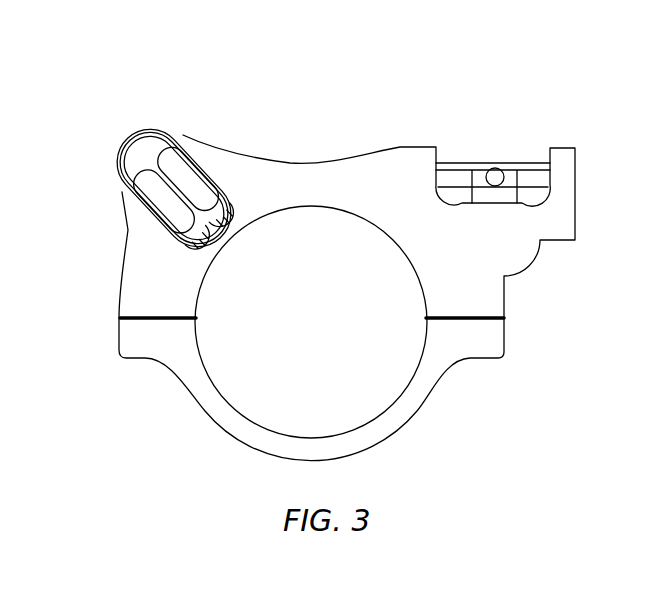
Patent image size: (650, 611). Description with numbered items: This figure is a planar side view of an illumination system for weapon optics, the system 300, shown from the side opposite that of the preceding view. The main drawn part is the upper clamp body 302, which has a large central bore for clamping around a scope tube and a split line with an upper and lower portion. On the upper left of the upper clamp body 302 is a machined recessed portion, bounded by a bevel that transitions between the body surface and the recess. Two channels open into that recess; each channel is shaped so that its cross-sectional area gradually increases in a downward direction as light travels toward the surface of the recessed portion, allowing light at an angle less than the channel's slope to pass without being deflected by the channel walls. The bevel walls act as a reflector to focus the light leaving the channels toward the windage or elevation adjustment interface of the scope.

The system 300 is at (339, 242).
The upper clamp body 302 is at (247, 153).